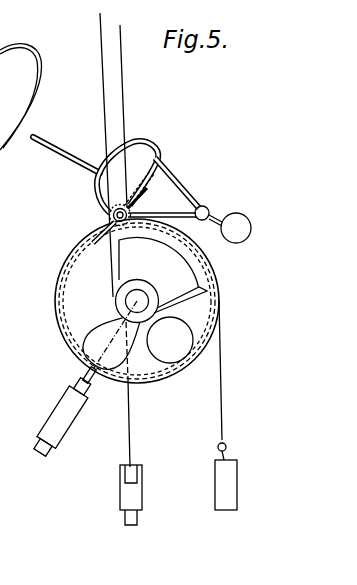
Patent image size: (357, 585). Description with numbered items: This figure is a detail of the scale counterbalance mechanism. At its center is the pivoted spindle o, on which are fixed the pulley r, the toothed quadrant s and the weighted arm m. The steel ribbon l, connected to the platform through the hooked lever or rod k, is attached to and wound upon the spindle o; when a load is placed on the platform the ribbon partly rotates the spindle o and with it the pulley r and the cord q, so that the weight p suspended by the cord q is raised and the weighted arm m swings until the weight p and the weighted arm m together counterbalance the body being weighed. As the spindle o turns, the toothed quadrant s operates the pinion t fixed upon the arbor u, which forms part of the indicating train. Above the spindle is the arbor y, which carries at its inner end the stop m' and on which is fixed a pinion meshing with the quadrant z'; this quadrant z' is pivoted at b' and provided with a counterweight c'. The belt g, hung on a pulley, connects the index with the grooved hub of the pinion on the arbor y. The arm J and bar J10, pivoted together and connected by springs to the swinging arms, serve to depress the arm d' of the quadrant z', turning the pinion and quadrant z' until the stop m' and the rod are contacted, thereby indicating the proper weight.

The arm J is at (13, 46).
The bar J10 is at (1, 50).
The belt g is at (103, 72).
The quadrant z' is at (176, 166).
The arm of the quadrant d' is at (66, 155).
The arbor u is at (96, 193).
The pinion t is at (108, 220).
The arbor y is at (136, 207).
The stop m' is at (147, 190).
The pivot b' is at (214, 208).
The counterweight c' is at (249, 224).
The spindle o is at (132, 299).
The toothed quadrant s is at (196, 287).
The pulley r is at (166, 378).
The weighted arm m is at (87, 376).
The steel ribbon l is at (129, 426).
The hooked lever or rod k is at (144, 471).
The cord q is at (224, 378).
The weight p is at (236, 483).